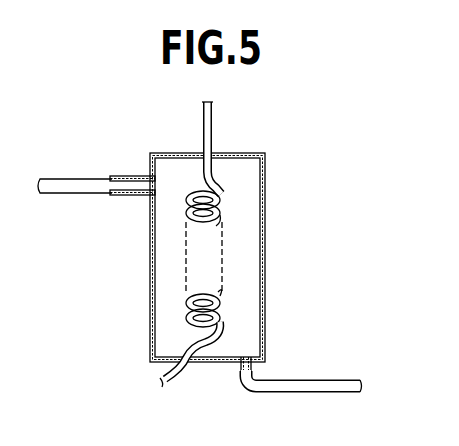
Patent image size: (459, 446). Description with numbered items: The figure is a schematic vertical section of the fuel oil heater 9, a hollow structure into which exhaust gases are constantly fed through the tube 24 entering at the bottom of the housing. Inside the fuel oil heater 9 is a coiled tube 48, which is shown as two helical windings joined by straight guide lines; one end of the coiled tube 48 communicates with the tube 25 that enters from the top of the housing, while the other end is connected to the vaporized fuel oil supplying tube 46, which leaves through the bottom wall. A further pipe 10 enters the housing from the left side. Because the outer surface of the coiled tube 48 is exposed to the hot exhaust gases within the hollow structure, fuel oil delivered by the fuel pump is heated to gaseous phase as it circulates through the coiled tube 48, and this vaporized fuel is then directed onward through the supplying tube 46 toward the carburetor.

The fuel oil heater 9 is at (271, 181).
The inlet pipe 10 is at (90, 178).
The tube 24 is at (290, 392).
The tube 25 is at (213, 120).
The vaporized fuel oil supplying tube 46 is at (178, 373).
The coiled tube 48 is at (220, 194).